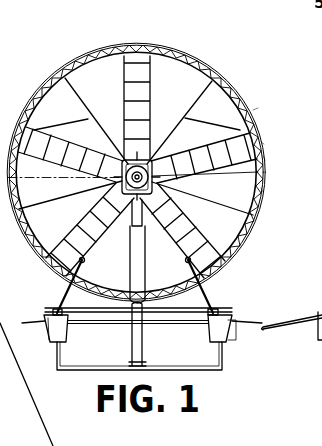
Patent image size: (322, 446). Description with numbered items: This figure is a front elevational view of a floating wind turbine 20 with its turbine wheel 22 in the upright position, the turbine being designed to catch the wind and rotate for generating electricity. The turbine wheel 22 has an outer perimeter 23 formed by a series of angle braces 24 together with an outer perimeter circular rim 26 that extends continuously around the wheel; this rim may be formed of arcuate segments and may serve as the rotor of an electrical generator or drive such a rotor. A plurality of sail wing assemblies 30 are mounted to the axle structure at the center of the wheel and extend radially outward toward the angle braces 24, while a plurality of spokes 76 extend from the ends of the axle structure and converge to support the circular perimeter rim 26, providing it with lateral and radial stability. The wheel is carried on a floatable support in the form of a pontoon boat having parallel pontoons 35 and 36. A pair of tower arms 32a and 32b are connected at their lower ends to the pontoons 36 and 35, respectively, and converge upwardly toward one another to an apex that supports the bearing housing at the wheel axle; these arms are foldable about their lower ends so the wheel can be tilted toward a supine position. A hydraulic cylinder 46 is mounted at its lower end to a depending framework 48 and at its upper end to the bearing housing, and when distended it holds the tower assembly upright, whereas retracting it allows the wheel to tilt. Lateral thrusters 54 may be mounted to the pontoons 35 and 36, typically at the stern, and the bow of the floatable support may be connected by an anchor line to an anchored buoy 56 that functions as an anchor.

The wind turbine 20 is at (229, 74).
The turbine wheel 22 is at (263, 114).
The outer perimeter 23 is at (264, 143).
The angle braces 24 is at (265, 158).
The outer perimeter circular rim 26 is at (263, 190).
The sail wing assemblies 30 is at (192, 236).
The spokes 76 is at (197, 90).
The tower arm 32a is at (67, 293).
The tower arm 32b is at (238, 292).
The pontoon 35 is at (224, 340).
The pontoon 36 is at (51, 338).
The hydraulic cylinder 46 is at (156, 348).
The depending framework 48 is at (213, 372).
The lateral thrusters 54 is at (54, 311).
The anchored buoy 56 is at (26, 384).